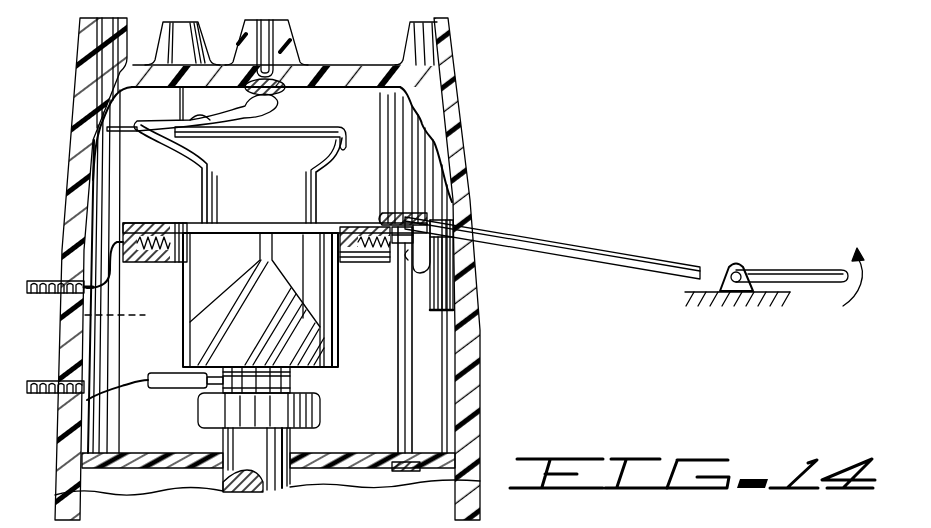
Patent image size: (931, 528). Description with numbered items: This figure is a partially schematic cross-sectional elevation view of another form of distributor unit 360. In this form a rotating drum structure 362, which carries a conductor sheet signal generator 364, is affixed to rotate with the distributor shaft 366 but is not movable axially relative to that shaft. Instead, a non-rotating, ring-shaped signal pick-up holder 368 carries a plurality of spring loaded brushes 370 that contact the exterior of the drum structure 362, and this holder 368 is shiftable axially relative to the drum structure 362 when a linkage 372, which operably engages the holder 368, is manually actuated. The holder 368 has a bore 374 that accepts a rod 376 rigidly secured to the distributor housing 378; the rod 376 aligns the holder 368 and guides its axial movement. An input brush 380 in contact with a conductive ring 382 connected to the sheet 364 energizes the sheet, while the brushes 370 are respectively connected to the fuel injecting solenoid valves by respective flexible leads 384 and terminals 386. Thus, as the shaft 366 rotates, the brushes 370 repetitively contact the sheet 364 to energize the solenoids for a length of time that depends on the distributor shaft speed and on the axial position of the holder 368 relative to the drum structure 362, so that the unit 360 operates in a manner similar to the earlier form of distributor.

The distributor unit 360 is at (486, 110).
The rotating drum structure 362 is at (349, 288).
The conductor sheet signal generator 364 is at (202, 327).
The distributor shaft 366 is at (272, 487).
The signal pick-up holder 368 is at (433, 246).
The spring loaded brushes 370 is at (165, 226).
The linkage 372 is at (646, 254).
The bore 374 is at (411, 262).
The rod 376 is at (400, 384).
The distributor housing 378 is at (464, 176).
The input brush 380 is at (188, 381).
The conductive ring 382 is at (290, 369).
The flexible leads 384 is at (110, 283).
The terminals 386 is at (48, 281).